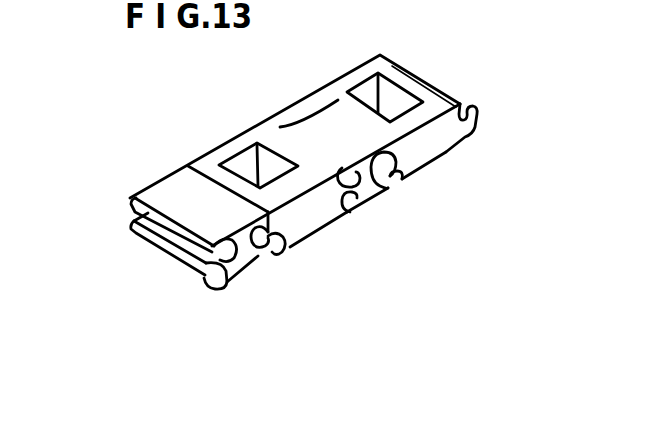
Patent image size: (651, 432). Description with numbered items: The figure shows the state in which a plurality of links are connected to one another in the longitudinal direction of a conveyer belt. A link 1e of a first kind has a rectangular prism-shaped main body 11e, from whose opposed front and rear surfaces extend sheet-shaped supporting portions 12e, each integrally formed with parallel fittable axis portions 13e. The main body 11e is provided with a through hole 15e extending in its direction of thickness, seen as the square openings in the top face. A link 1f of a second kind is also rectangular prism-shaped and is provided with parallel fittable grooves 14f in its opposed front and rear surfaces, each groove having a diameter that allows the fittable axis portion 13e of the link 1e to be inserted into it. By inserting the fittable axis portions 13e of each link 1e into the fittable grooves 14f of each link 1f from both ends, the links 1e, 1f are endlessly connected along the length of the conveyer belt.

The link of a first kind 1e is at (217, 140).
The link of a second kind 1f is at (297, 102).
The main body 11e is at (262, 125).
The sheet-shaped supporting portions 12e is at (285, 248).
The parallel fittable axis portions 13e is at (342, 170).
The parallel fittable grooves 14f is at (202, 284).
The through hole 15e is at (233, 166).